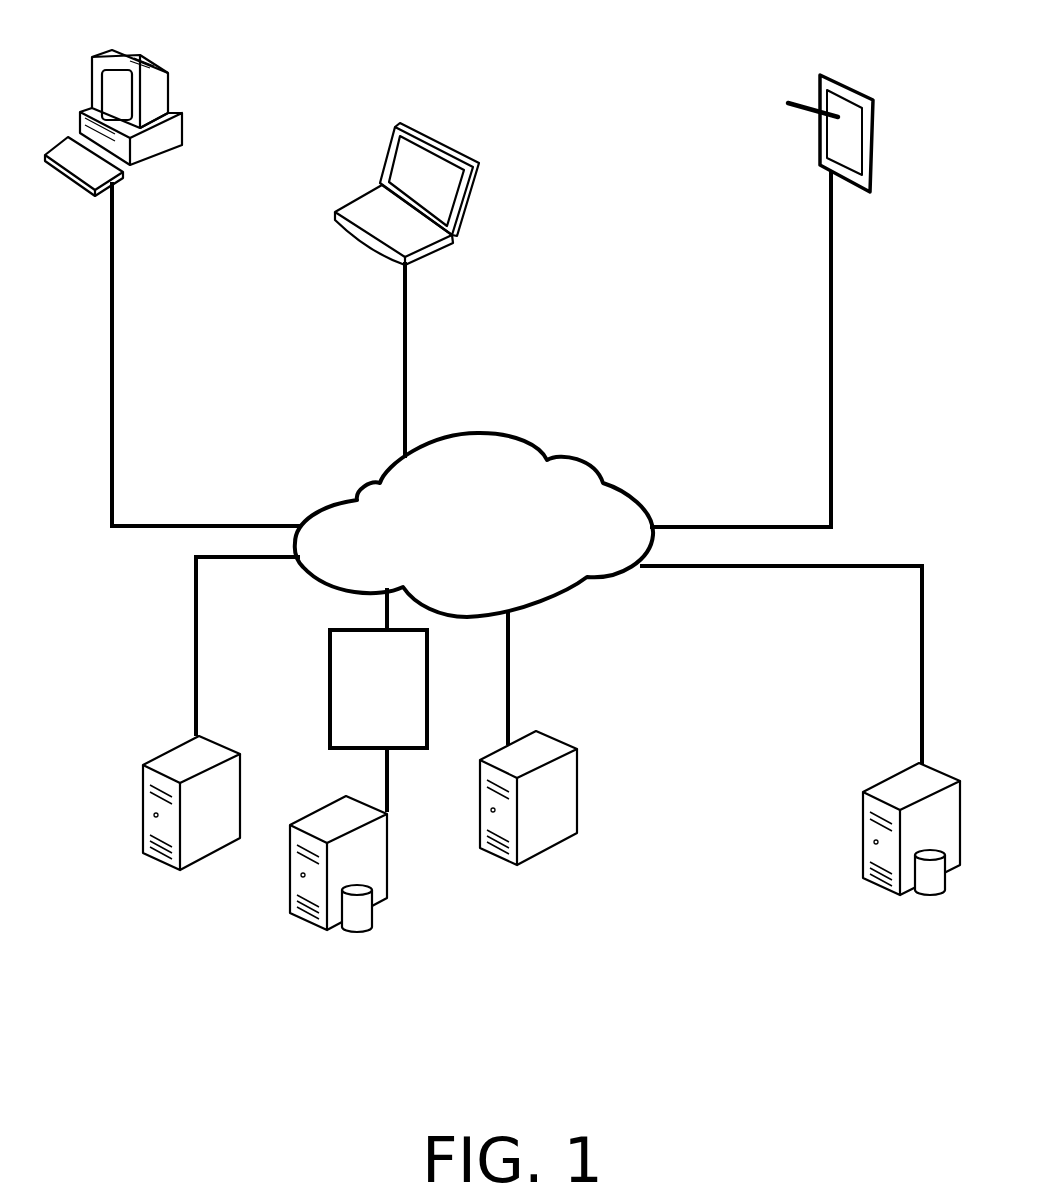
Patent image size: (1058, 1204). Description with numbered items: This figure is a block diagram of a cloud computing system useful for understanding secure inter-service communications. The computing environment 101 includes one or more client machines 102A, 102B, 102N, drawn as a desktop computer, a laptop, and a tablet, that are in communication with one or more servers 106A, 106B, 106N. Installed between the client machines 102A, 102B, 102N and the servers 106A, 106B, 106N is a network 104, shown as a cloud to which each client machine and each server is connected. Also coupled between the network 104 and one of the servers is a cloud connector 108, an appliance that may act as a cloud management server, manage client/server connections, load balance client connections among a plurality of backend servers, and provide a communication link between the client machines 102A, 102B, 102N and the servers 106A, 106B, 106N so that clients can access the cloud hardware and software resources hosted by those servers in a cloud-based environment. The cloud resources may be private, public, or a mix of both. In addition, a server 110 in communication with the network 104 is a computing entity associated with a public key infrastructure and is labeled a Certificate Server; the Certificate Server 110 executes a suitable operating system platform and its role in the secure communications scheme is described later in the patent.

The computing environment 101 is at (610, 355).
The client machine 102A is at (163, 70).
The client machine 102B is at (437, 143).
The client machine 102N is at (842, 92).
The network 104 is at (474, 525).
The server 106A is at (180, 872).
The server 106B is at (327, 932).
The server 106N is at (547, 850).
The cloud connector 108 is at (395, 698).
The Certificate Server 110 is at (897, 898).